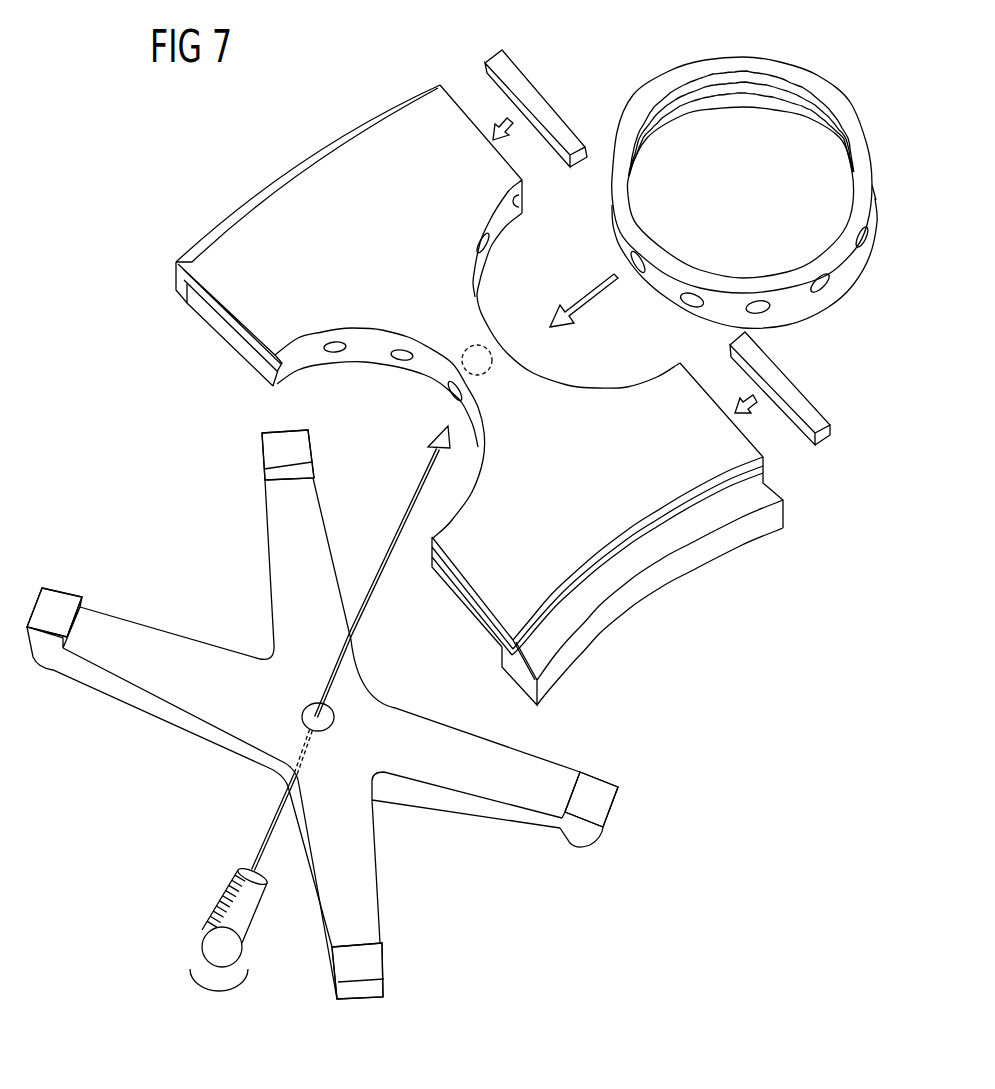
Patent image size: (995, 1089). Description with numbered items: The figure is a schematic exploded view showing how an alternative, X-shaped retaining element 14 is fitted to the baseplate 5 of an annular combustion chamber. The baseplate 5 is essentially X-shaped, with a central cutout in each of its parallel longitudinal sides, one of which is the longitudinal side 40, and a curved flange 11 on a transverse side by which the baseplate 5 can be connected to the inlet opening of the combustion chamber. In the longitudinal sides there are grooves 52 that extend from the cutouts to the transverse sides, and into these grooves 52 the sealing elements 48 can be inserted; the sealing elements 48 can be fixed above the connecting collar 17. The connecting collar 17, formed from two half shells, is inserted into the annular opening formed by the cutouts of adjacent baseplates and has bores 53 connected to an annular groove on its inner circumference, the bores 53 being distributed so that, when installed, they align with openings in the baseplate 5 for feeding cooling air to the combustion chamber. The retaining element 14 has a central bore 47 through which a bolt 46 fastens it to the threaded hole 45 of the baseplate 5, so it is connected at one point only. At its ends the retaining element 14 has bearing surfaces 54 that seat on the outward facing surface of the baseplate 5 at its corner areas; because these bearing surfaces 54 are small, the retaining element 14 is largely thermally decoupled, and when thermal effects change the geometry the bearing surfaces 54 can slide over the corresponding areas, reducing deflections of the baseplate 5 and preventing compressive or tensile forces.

The baseplate 5 is at (437, 105).
The flange 11 is at (587, 597).
The retaining element 14 is at (527, 830).
The connecting collar 17 is at (838, 268).
The longitudinal side 40 is at (462, 602).
The threaded hole 45 is at (468, 350).
The bolt 46 is at (215, 947).
The central bore 47 is at (314, 704).
The sealing element 48 is at (522, 90).
The groove 52 is at (238, 328).
The bore 53 is at (757, 312).
The bearing surface 54 is at (277, 447).